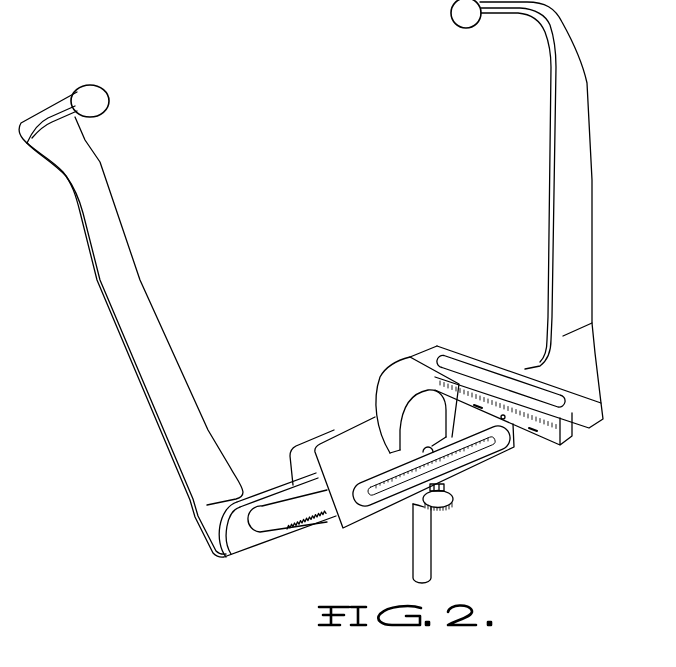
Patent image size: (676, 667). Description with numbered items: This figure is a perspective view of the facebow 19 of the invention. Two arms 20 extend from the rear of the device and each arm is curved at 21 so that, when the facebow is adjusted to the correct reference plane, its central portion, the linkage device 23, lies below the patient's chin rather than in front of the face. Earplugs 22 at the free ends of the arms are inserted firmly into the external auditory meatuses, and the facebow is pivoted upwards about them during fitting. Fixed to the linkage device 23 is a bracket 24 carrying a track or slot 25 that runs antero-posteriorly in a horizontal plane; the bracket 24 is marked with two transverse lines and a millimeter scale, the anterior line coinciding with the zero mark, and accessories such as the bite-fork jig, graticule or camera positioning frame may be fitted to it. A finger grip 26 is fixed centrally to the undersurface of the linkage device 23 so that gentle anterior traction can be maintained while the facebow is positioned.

The facebow 19 is at (172, 331).
The arms 20 is at (128, 279).
The curve 21 is at (80, 149).
The earplugs 22 is at (103, 110).
The linkage device 23 is at (350, 514).
The bracket 24 is at (508, 230).
The slot 25 is at (459, 363).
The finger grip 26 is at (431, 537).